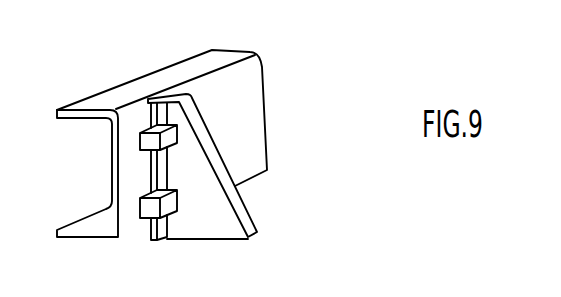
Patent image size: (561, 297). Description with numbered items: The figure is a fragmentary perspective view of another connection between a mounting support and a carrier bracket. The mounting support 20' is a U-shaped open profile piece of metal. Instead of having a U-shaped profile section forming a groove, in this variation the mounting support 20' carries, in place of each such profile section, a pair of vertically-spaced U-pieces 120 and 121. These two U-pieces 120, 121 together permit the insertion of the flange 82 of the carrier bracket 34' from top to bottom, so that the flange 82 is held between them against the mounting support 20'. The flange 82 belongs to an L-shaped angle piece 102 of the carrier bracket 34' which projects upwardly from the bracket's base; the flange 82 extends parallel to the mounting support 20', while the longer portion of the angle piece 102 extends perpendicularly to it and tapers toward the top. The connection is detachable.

The mounting support 20' is at (162, 122).
The flange 82 is at (161, 108).
The angle piece 102 is at (190, 148).
The U-piece 120 is at (147, 138).
The U-piece 121 is at (150, 208).
The carrier bracket 34' is at (269, 189).